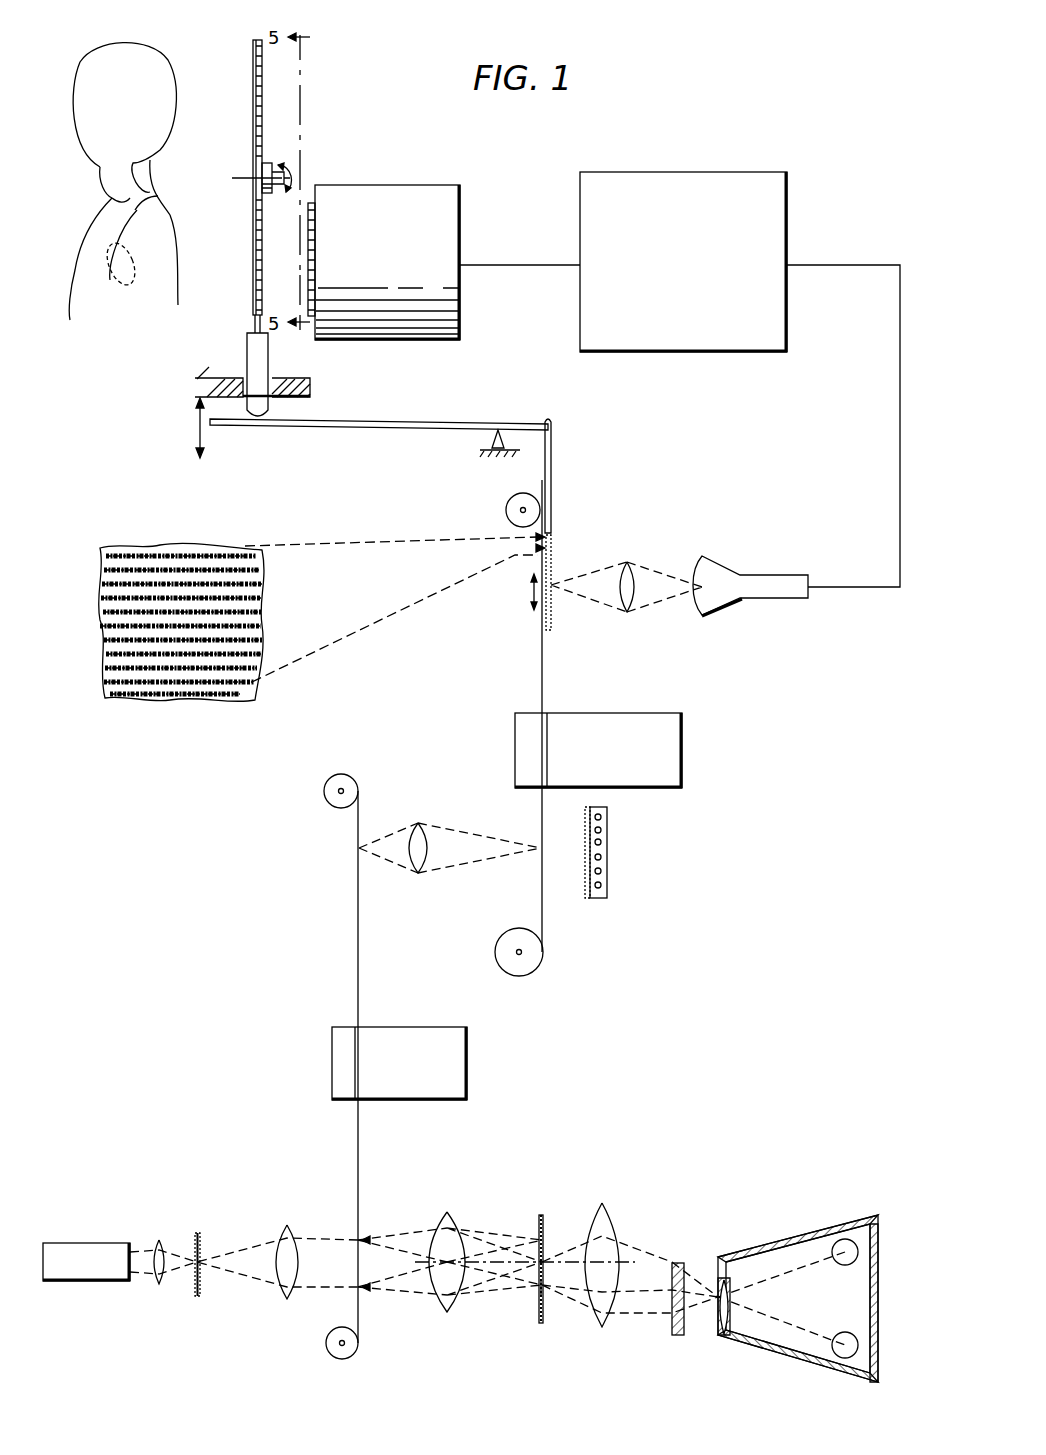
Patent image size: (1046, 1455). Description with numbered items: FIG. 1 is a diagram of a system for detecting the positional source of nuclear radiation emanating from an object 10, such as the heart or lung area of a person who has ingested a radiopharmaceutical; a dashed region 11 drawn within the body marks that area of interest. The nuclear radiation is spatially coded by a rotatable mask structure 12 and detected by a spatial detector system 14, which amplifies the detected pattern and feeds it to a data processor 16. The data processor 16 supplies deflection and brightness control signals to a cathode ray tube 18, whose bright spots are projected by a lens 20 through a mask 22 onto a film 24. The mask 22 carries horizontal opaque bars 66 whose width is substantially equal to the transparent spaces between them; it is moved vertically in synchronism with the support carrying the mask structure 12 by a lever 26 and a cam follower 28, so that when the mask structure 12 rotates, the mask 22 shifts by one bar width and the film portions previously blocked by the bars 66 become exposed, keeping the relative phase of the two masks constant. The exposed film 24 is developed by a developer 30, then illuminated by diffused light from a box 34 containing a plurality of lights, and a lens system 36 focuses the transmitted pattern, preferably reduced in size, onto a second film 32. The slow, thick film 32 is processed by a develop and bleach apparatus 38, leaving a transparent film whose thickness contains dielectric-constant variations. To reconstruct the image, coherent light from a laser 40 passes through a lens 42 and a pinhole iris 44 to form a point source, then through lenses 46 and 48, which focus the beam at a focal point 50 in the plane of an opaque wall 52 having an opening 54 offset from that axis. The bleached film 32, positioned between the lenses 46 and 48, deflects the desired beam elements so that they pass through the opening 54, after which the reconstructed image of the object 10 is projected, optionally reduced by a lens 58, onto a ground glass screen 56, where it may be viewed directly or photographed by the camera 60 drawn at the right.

The object 10 is at (172, 190).
The organ / region of interest 11 is at (135, 257).
The mask structure 12 is at (243, 113).
The spatial detector system 14 is at (376, 190).
The data processor 16 is at (663, 172).
The cathode ray tube 18 is at (748, 565).
The lens 20 is at (627, 604).
The mask 22 is at (552, 620).
The film 24 is at (540, 605).
The lever 26 is at (442, 420).
The cam follower 28 is at (258, 410).
The developer 30 is at (682, 760).
The second film 32 is at (357, 893).
The box 34 is at (586, 828).
The lens system 36 is at (421, 838).
The develop and bleach apparatus 38 is at (468, 1055).
The laser 40 is at (68, 1242).
The lens 42 is at (162, 1245).
The pinhole iris 44 is at (199, 1250).
The lens 46 is at (291, 1232).
The lens 48 is at (452, 1222).
The focal point 50 is at (543, 1262).
The opaque wall 52 is at (535, 1228).
The opening 54 is at (539, 1290).
The ground glass screen 56 is at (680, 1262).
The lens 58 is at (608, 1212).
The camera 60 is at (793, 1242).
The horizontal opaque bars 66 is at (102, 622).